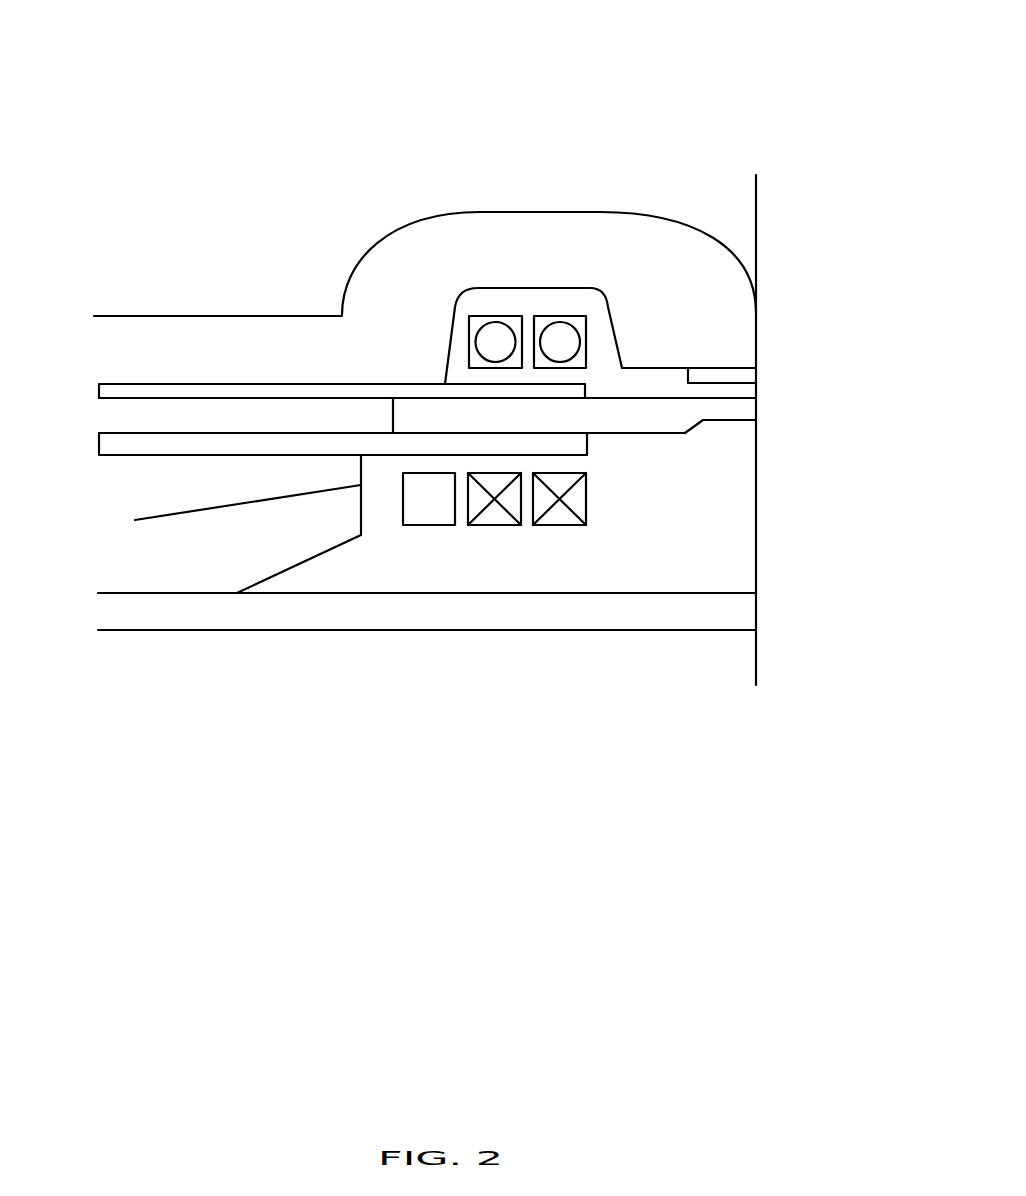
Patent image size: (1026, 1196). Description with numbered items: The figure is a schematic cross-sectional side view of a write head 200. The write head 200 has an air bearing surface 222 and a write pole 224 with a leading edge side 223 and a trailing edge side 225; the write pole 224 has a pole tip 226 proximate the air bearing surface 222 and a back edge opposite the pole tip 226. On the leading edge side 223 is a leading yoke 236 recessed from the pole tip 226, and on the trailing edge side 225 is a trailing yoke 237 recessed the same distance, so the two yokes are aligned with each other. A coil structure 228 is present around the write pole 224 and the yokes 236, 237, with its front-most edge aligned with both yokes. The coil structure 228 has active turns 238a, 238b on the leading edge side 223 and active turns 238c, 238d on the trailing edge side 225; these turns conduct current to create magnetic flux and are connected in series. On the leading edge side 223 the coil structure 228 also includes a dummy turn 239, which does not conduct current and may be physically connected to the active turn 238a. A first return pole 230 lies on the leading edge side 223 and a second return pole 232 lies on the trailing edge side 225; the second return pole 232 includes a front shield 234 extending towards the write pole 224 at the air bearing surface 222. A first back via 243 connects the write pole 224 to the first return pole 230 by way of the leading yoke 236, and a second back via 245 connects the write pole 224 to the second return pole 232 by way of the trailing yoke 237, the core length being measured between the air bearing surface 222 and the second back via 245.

The write head 200 is at (218, 92).
The air bearing surface 222 is at (756, 455).
The leading edge side 223 is at (633, 435).
The write pole 224 is at (620, 433).
The trailing edge side 225 is at (663, 398).
The pole tip 226 is at (756, 404).
The coil structure 228 is at (563, 305).
The first return pole 230 is at (427, 611).
The second return pole 232 is at (218, 337).
The front shield 234 is at (720, 368).
The leading yoke 236 is at (398, 455).
The trailing yoke 237 is at (338, 383).
The active turn 238a is at (482, 525).
The active turn 238b is at (555, 525).
The active turn 238c is at (503, 315).
The active turn 238d is at (548, 315).
The dummy turn 239 is at (415, 525).
The first back via 243 is at (135, 520).
The second back via 245 is at (448, 337).